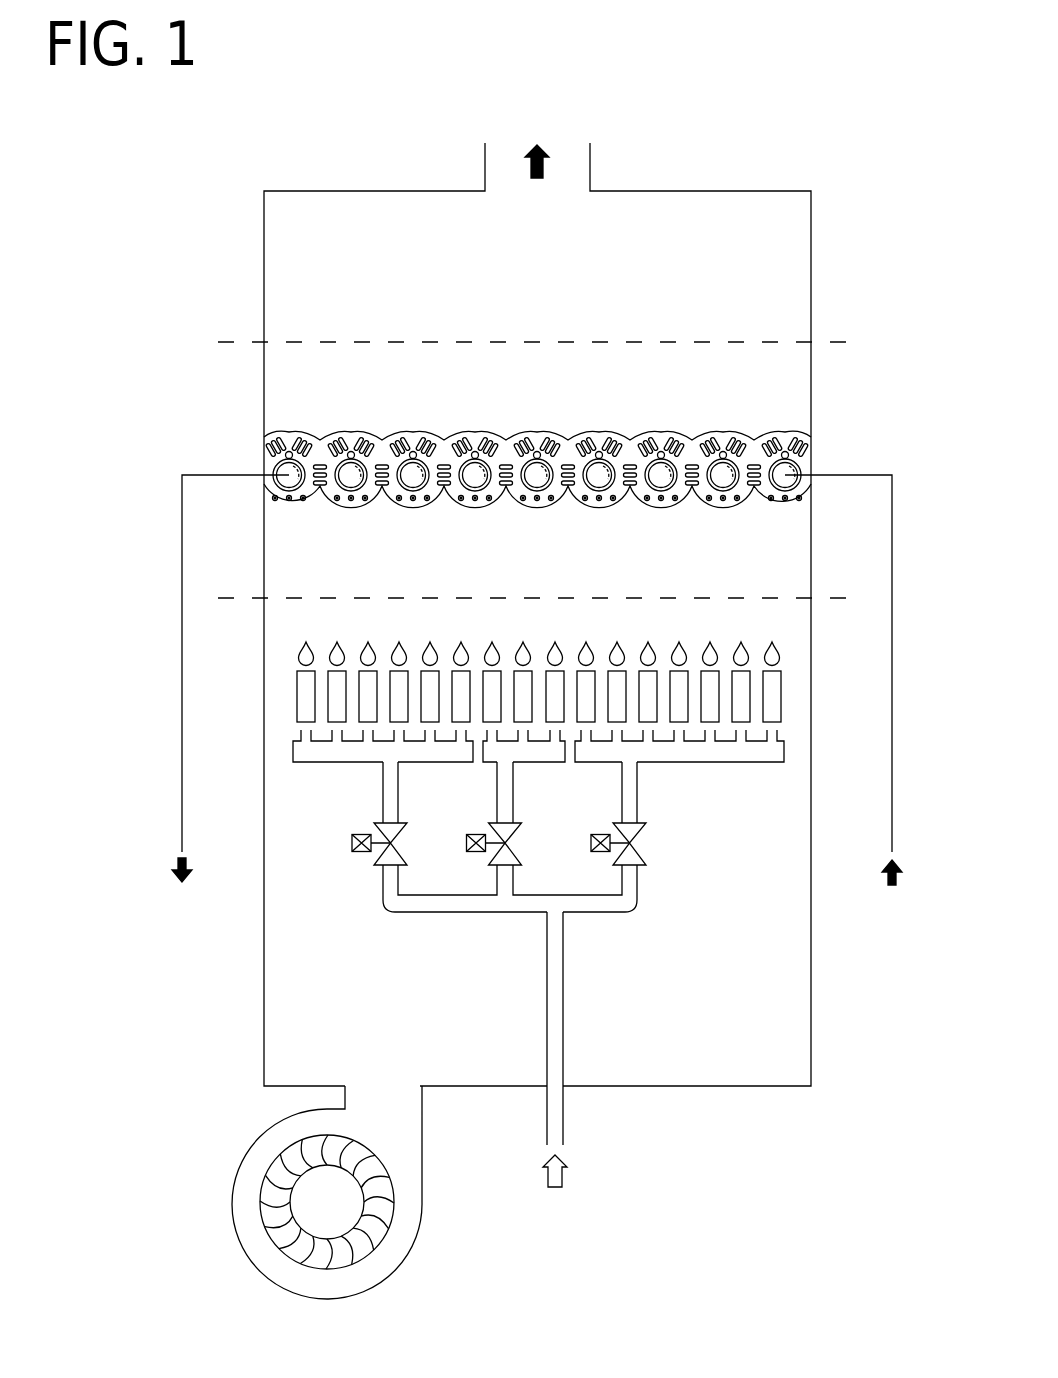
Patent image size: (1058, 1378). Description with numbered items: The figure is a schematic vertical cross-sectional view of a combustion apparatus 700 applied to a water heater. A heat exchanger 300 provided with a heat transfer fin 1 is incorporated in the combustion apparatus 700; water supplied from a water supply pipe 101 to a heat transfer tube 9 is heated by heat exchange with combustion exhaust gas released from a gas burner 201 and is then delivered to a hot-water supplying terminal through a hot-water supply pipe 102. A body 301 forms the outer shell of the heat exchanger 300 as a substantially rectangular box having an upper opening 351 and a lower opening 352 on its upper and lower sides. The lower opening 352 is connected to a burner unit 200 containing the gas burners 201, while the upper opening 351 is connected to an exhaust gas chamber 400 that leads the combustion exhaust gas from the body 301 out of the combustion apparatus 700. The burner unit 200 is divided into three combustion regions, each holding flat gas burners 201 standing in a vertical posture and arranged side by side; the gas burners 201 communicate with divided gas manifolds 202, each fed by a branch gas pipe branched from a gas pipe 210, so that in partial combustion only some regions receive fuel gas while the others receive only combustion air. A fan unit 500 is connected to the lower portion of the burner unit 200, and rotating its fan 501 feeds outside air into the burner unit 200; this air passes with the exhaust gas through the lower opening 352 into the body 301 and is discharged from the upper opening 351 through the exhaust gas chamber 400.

The combustion apparatus 700 is at (233, 208).
The exhaust gas chamber 400 is at (811, 252).
The heat exchanger 300 is at (503, 430).
The body 301 is at (264, 400).
The heat transfer fin 1 is at (785, 432).
The heat transfer tube 9 is at (600, 432).
The upper opening 351 is at (406, 343).
The lower opening 352 is at (406, 599).
The water supply pipe 101 is at (892, 515).
The hot-water supply pipe 102 is at (182, 525).
The burner unit 200 is at (476, 935).
The gas burner 201 is at (297, 695).
The gas manifold 202 is at (293, 748).
The gas pipe 210 is at (547, 947).
The fan unit 500 is at (270, 1192).
The fan 501 is at (280, 1160).